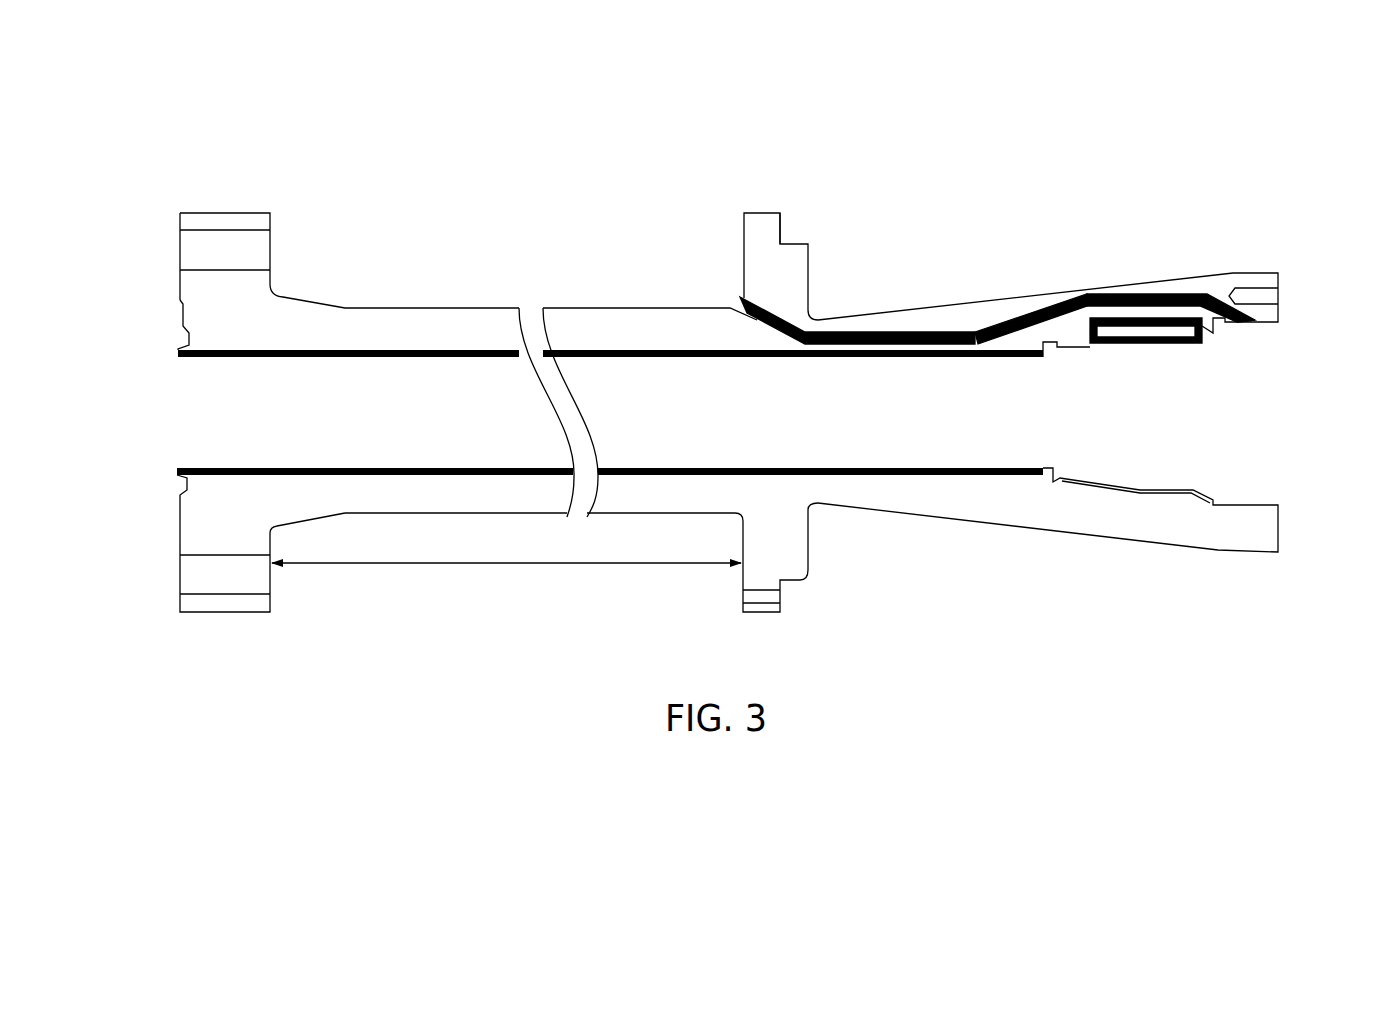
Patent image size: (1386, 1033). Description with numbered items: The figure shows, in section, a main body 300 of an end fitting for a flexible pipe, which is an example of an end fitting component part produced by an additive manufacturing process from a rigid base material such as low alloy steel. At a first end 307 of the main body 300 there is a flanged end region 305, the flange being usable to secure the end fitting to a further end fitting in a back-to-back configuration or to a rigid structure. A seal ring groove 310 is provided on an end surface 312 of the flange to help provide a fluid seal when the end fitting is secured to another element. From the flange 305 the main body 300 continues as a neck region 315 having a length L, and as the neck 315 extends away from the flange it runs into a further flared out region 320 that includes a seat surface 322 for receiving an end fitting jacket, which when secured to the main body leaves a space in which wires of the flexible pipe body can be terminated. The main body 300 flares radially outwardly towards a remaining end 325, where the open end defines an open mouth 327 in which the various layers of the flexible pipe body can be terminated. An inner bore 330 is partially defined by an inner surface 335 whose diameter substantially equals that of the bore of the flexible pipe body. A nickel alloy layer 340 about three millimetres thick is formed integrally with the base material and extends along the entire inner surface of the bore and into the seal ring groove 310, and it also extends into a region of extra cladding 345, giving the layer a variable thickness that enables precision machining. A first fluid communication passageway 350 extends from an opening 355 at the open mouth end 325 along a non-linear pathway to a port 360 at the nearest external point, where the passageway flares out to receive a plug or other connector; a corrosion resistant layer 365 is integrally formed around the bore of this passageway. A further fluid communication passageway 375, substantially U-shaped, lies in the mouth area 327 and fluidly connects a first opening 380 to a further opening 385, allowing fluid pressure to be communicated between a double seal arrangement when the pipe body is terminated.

The main body 300 is at (773, 117).
The flanged end region 305 is at (200, 289).
The first end 307 is at (106, 381).
The seal ring groove 310 is at (172, 487).
The end surface 312 is at (180, 548).
The neck region 315 is at (400, 333).
The flared out region 320 is at (760, 262).
The seat surface 322 is at (781, 232).
The remaining end 325 is at (1318, 311).
The open mouth 327 is at (1278, 429).
The inner bore 330 is at (435, 429).
The inner surface 335 is at (290, 357).
The nickel alloy layer 340 is at (180, 316).
The region of extra cladding 345 is at (1062, 466).
The first fluid communication passageway 350 is at (1053, 306).
The opening 355 is at (1259, 332).
The port 360 is at (720, 295).
The corrosion resistant layer 365 is at (982, 330).
The further fluid communication passageway 375 is at (1140, 322).
The first opening 380 is at (1202, 343).
The further opening 385 is at (1097, 353).